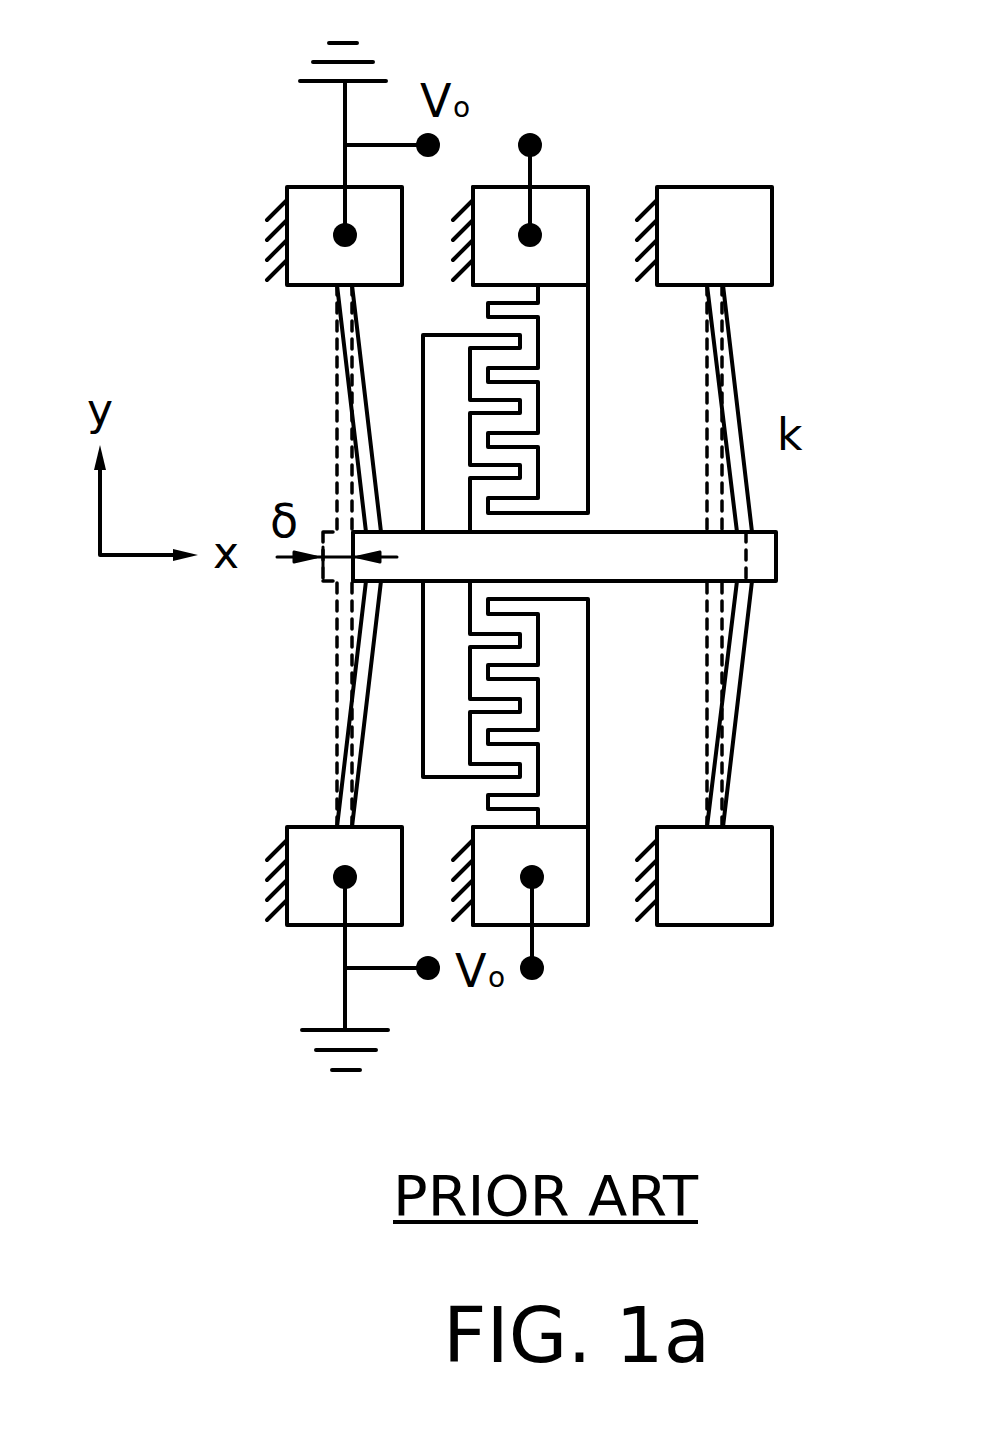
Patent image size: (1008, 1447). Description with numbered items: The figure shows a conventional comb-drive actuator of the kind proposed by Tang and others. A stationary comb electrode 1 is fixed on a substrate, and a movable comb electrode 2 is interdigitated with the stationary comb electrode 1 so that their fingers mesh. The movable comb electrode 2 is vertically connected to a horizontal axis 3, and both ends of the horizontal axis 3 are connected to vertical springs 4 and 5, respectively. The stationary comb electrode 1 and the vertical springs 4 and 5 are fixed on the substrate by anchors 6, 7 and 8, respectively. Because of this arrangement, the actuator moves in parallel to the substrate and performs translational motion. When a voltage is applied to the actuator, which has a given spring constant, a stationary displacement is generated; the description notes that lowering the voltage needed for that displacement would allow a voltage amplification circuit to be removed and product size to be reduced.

The stationary comb electrode 1 is at (575, 305).
The movable comb electrode 2 is at (437, 713).
The horizontal axis 3 is at (663, 582).
The vertical spring 4 is at (358, 425).
The vertical spring 5 is at (730, 360).
The anchor 6 is at (490, 190).
The anchor 7 is at (297, 200).
The anchor 8 is at (750, 190).